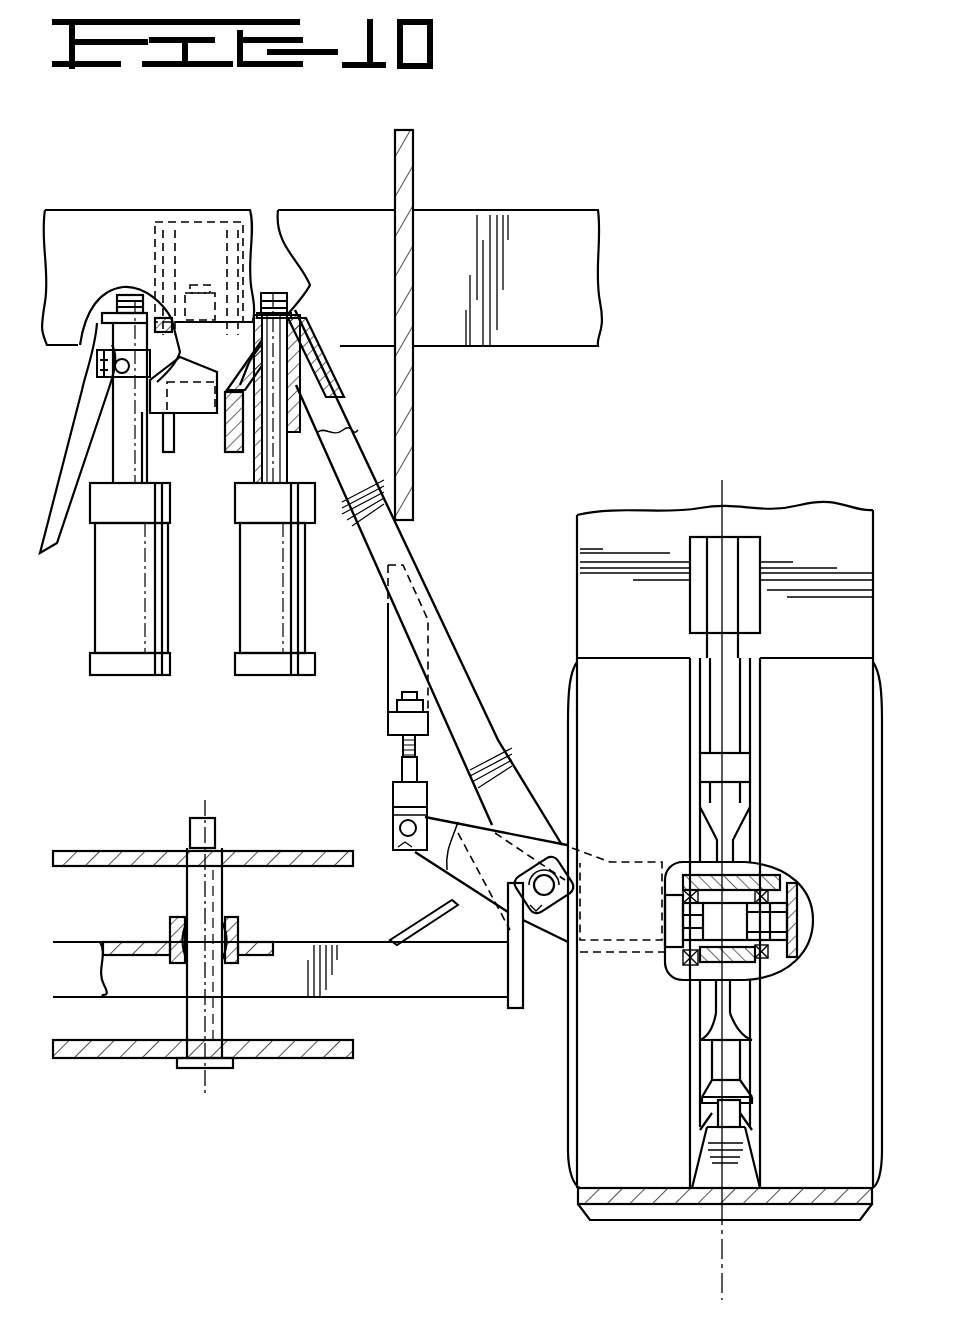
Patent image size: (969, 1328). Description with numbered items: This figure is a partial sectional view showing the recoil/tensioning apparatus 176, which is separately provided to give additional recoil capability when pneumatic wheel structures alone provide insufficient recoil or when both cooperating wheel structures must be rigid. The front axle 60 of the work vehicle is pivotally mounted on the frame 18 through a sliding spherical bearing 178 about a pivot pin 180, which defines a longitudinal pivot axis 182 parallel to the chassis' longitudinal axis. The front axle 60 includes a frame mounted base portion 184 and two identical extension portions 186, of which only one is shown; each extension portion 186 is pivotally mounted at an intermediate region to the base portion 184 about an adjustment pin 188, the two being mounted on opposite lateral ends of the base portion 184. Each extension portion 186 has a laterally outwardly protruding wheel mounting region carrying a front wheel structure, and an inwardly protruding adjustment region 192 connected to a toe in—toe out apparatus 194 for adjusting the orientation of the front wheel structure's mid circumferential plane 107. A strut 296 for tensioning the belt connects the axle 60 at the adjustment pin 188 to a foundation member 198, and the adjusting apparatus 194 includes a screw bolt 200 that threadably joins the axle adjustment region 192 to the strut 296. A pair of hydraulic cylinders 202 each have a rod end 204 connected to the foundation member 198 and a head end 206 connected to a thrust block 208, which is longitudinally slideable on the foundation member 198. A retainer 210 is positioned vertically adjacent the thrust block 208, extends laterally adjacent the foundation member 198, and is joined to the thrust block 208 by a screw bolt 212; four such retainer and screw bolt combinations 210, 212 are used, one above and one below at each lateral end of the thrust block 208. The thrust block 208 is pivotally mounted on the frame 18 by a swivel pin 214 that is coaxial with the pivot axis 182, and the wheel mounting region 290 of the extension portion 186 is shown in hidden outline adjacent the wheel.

The frame 18 is at (412, 192).
The front axle 60 is at (477, 1003).
The mid circumferential plane 107 is at (722, 1263).
The recoil/tensioning apparatus 176 is at (331, 1125).
The sliding spherical bearing 178 is at (266, 893).
The pivot pin 180 is at (215, 1020).
The longitudinal pivot axis 182 is at (205, 1085).
The base portion 184 is at (437, 1003).
The extension portion 186 is at (523, 838).
The adjustment pin 188 is at (540, 885).
The adjustment region 192 is at (437, 862).
The toe in-toe out apparatus 194 is at (382, 790).
The foundation member 198 is at (293, 312).
The screw bolt 200 is at (392, 767).
The hydraulic cylinders 202 is at (228, 515).
The rod end 204 is at (102, 332).
The head end 206 is at (248, 622).
The thrust block 208 is at (288, 312).
The retainer 210 is at (95, 370).
The screw bolt 212 is at (97, 388).
The swivel pin 214 is at (203, 293).
The hidden hub outline 290 is at (625, 938).
The diagonal bar 296 is at (443, 642).